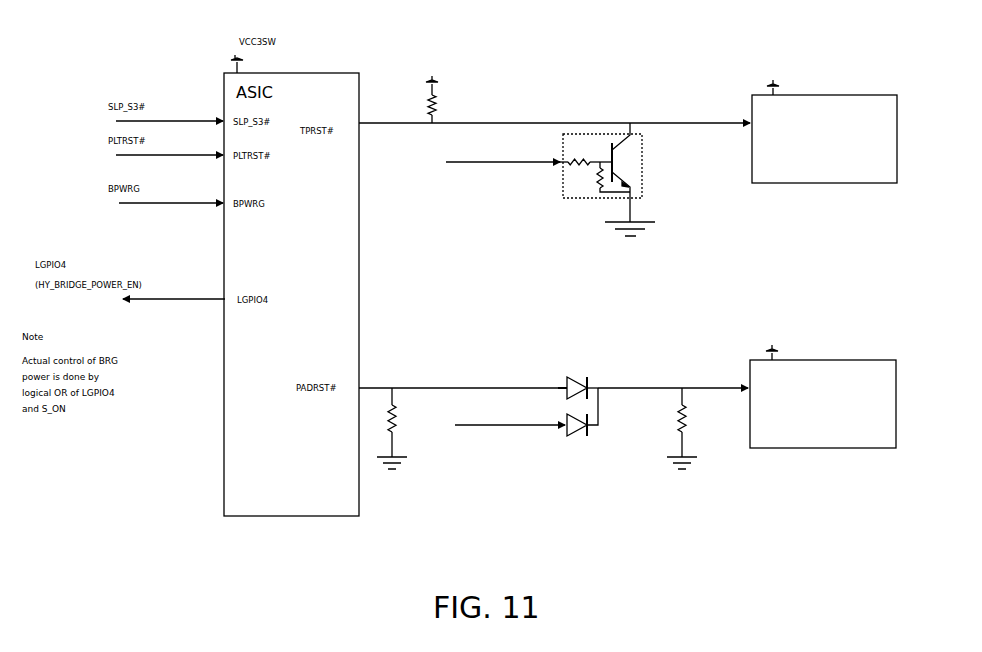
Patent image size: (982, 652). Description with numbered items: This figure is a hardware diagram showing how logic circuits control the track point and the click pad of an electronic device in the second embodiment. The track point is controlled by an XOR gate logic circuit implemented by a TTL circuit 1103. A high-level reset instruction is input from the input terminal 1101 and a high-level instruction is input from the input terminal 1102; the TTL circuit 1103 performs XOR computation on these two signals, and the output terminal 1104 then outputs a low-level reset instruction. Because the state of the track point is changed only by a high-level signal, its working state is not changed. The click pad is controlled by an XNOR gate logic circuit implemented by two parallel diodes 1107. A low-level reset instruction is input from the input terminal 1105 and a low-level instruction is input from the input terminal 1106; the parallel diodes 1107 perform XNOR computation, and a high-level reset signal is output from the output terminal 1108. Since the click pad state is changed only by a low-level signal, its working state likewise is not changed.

The input terminal 1101 is at (527, 122).
The input terminal 1102 is at (520, 172).
The TTL circuit 1103 is at (623, 130).
The output terminal 1104 is at (687, 125).
The input terminal 1105 is at (418, 392).
The input terminal 1106 is at (437, 388).
The parallel diodes 1107 is at (583, 435).
The output terminal 1108 is at (643, 387).